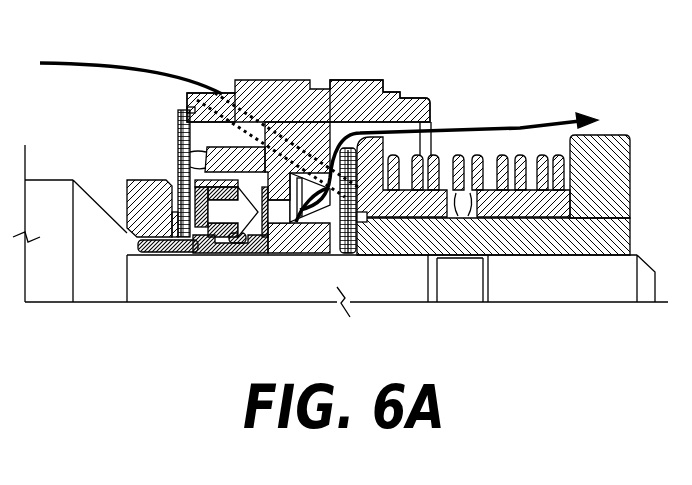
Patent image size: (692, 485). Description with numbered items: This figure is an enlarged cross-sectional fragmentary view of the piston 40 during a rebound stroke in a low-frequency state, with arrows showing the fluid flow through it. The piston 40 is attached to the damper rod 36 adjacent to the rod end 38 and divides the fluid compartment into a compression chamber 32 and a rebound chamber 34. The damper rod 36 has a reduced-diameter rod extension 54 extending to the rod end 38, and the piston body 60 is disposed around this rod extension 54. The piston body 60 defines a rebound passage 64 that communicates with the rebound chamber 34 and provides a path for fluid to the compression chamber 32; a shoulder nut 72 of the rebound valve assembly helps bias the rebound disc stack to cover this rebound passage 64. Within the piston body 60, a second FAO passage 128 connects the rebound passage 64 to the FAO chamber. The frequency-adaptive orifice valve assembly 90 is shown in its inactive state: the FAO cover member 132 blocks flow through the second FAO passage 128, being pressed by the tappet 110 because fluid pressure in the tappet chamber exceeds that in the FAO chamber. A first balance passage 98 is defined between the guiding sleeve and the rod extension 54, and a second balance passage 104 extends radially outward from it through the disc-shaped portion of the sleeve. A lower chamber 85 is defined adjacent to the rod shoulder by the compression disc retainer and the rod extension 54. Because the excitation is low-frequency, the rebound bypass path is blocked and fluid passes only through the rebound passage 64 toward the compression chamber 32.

The compression chamber 32 is at (497, 103).
The rebound chamber 34 is at (131, 118).
The damper rod 36 is at (58, 181).
The rod end 38 is at (658, 289).
The piston 40 is at (247, 80).
The rod extension 54 is at (578, 285).
The piston body 60 is at (400, 107).
The rebound passage 64 is at (220, 91).
The shoulder nut 72 is at (603, 144).
The lower chamber 85 is at (132, 248).
The frequency-adaptive orifice (FAO) valve assembly 90 is at (260, 264).
The first balance passage 98 is at (167, 255).
The second balance passage 104 is at (208, 247).
The tappet 110 is at (230, 229).
The second FAO passage 128 is at (290, 213).
The FAO cover member 132 is at (262, 192).